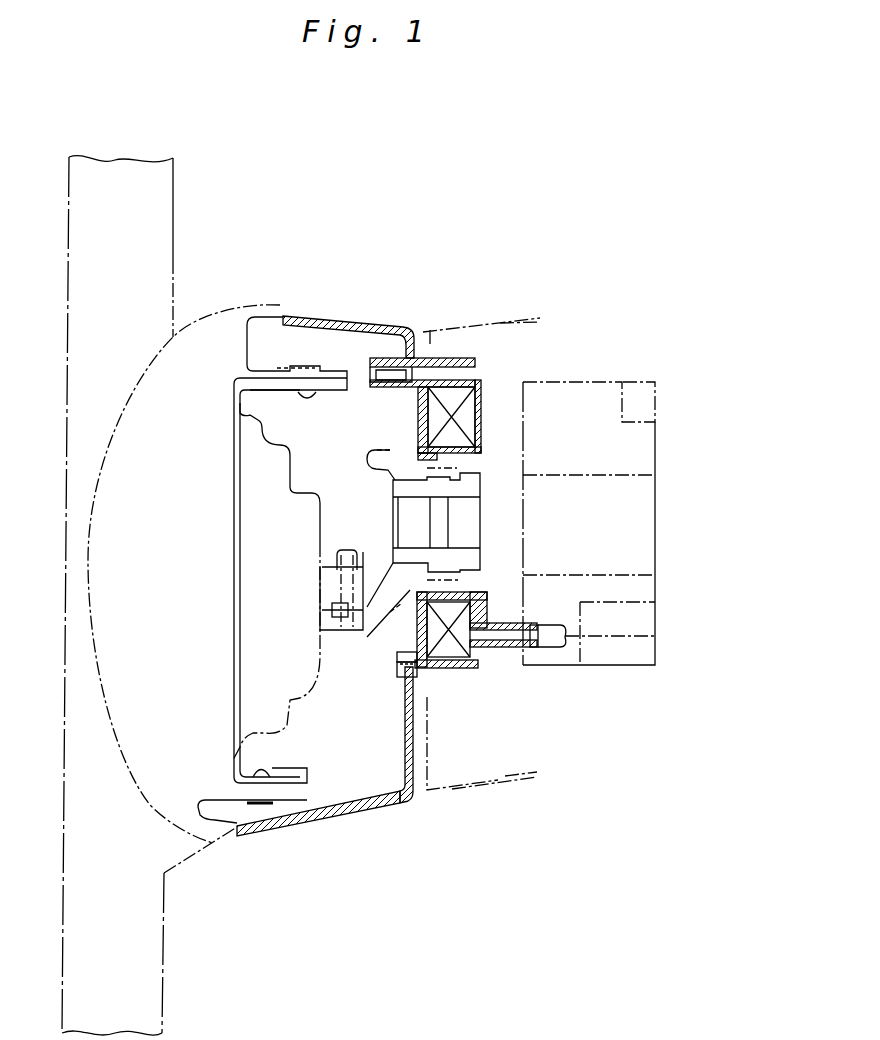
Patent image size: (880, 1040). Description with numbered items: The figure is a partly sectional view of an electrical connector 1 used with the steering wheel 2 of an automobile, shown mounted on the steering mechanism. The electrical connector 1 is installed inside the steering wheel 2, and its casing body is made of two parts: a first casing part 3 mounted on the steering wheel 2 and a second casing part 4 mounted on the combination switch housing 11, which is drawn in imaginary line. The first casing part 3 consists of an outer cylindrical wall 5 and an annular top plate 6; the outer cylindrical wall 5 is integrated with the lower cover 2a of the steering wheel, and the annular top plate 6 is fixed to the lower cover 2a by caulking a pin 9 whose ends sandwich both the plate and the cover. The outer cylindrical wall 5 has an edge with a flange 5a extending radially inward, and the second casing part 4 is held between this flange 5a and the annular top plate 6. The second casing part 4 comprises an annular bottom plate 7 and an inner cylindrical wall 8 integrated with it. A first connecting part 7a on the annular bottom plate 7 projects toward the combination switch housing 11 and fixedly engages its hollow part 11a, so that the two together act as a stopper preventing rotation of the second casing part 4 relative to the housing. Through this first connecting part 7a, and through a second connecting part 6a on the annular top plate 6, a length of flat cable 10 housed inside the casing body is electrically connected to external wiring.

The electrical connector 1 is at (465, 348).
The steering wheel 2 is at (186, 309).
The lower cover 2a is at (288, 828).
The first casing part 3 is at (452, 763).
The second casing part 4 is at (530, 358).
The outer cylindrical wall 5 is at (480, 740).
The flange 5a is at (490, 657).
The annular top plate 6 is at (403, 650).
The second connecting part 6a is at (377, 357).
The annular bottom plate 7 is at (480, 420).
The first connecting part 7a is at (528, 650).
The inner cylindrical wall 8 is at (462, 458).
The pin 9 is at (397, 688).
The flat cable 10 is at (440, 415).
The combination switch housing 11 is at (618, 667).
The hollow part 11a is at (620, 637).